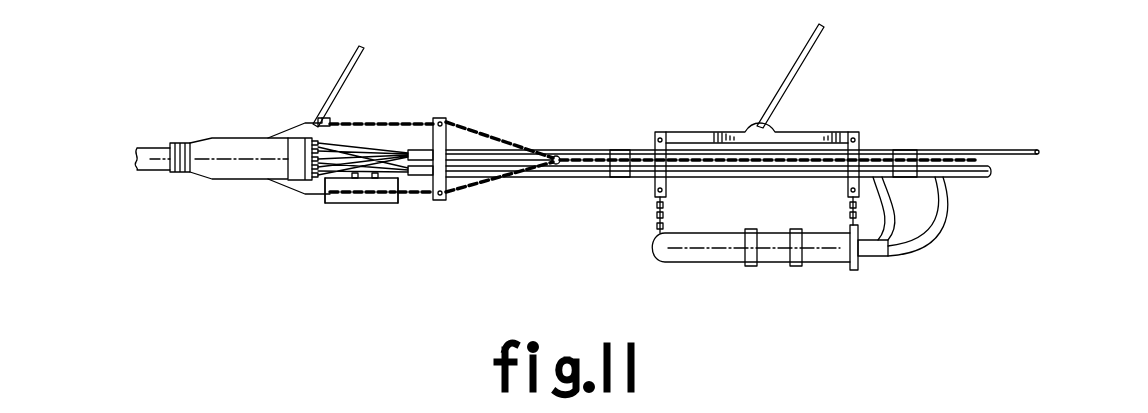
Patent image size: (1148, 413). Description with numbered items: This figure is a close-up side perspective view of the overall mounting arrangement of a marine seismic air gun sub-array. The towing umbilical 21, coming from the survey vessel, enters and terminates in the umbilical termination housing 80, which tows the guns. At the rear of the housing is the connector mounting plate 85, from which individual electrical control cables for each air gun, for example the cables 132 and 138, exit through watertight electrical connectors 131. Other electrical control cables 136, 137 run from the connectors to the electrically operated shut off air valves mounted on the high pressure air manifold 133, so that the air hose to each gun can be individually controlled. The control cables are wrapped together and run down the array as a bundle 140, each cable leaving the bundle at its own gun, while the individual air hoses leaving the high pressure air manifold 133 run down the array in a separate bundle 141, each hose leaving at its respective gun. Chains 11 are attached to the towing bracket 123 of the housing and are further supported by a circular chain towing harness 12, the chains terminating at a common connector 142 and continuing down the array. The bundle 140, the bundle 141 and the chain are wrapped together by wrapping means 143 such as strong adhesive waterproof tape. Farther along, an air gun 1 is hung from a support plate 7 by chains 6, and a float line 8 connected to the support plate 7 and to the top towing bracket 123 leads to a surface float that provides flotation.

The air gun 1 is at (738, 266).
The chains 6 is at (663, 212).
The support plate 7 is at (805, 130).
The float line 8 is at (348, 63).
The chain 11 is at (403, 205).
The circular chain towing harness 12 is at (462, 189).
The towing umbilical 21 is at (153, 148).
The umbilical termination housing 80 is at (237, 195).
The connector mounting plate 85 is at (311, 120).
The towing bracket 123 is at (290, 128).
The mating watertight electrical connectors 131 is at (330, 125).
The electrical control cable 132 is at (368, 128).
The high pressure air manifold 133 is at (350, 205).
The electrical control cable 136 is at (328, 196).
The electrical control cable 137 is at (362, 198).
The electrical control cable 138 is at (418, 178).
The bundle of electrical control cables 140 is at (590, 148).
The bundle of individual air hoses 141 is at (582, 178).
The common connector 142 is at (560, 150).
The wrapping means 143 is at (622, 148).